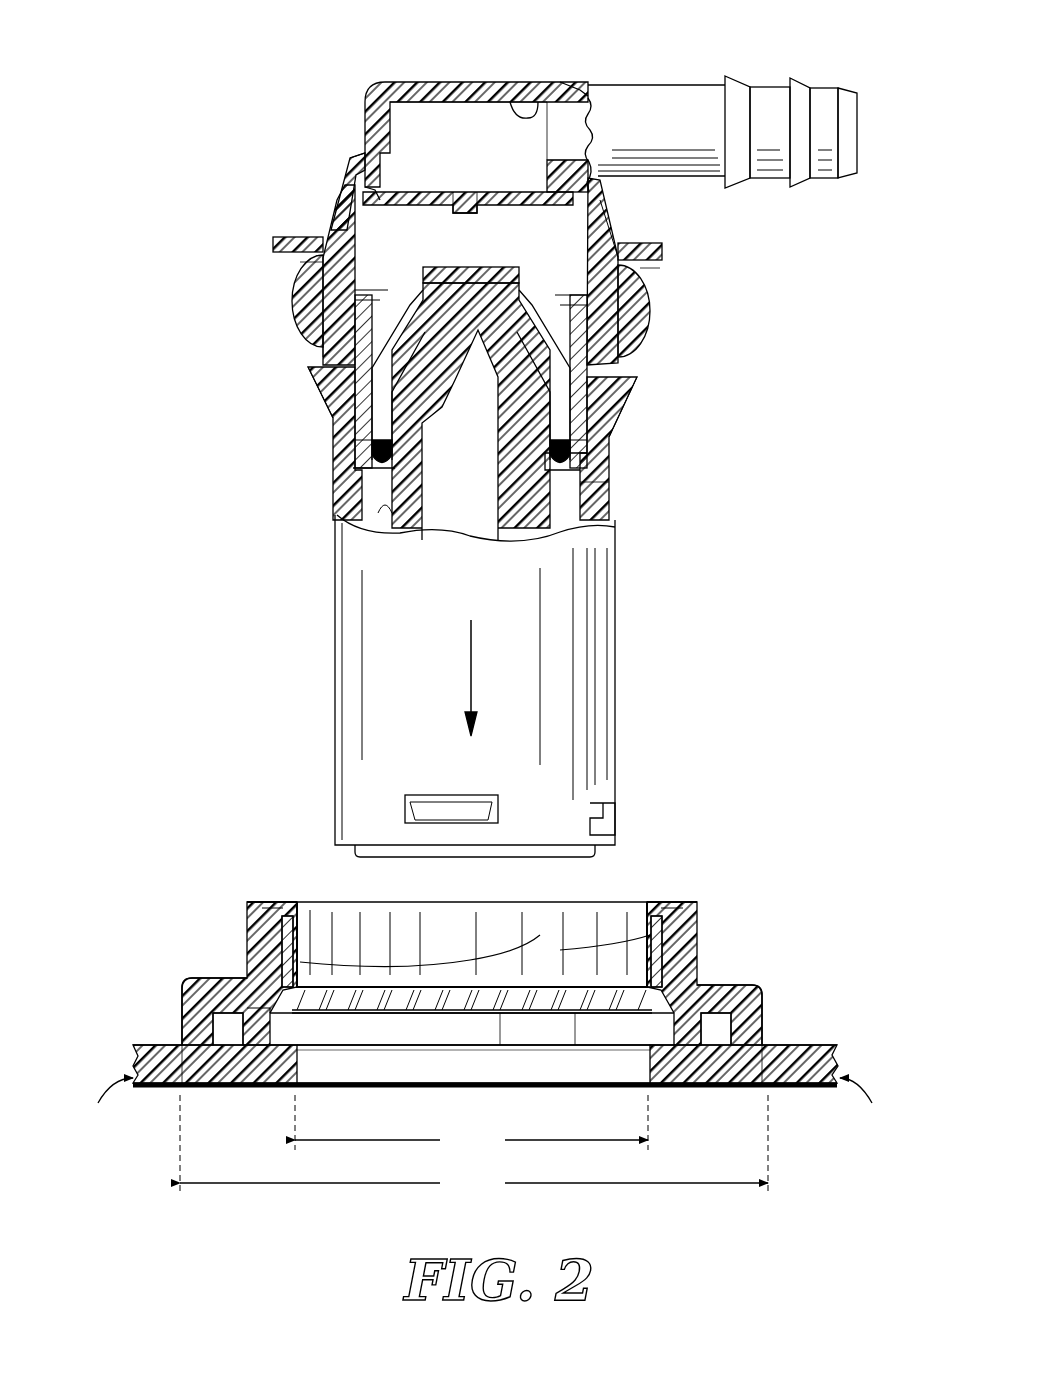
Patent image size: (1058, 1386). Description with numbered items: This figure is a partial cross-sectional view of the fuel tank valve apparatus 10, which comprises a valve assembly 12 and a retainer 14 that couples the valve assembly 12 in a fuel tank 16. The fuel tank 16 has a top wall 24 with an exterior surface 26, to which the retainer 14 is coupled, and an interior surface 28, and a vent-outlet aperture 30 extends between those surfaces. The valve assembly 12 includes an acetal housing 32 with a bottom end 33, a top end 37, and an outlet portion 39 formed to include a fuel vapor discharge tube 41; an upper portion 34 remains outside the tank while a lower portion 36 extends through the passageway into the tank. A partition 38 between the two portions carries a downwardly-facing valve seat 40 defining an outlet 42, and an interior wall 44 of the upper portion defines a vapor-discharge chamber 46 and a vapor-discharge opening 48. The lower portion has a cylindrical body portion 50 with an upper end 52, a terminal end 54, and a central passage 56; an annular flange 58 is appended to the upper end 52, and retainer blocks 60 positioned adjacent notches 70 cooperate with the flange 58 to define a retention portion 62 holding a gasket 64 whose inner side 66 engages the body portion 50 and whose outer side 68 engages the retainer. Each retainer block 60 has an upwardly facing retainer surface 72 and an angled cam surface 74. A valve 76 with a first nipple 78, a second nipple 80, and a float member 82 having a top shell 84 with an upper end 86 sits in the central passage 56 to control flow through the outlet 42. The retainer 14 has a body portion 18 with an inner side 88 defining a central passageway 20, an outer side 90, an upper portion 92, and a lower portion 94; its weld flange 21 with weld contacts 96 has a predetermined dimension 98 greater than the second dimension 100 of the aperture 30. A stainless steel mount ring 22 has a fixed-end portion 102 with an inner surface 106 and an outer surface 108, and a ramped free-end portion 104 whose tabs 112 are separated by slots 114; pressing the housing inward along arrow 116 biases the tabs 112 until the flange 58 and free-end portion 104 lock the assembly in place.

The fuel tank valve apparatus 10 is at (760, 668).
The valve assembly 12 is at (330, 764).
The retainer 14 is at (164, 920).
The fuel tank 16 is at (150, 1098).
The body portion 18 is at (240, 923).
The central passageway 20 is at (618, 896).
The weld flange 21 is at (170, 966).
The mount ring 22 is at (292, 952).
The top wall 24 is at (491, 1116).
The exterior surface 26 is at (160, 1045).
The interior surface 28 is at (168, 1094).
The vent-outlet aperture 30 is at (380, 1064).
The housing 32 is at (332, 195).
The bottom end 33 is at (355, 850).
The upper portion 34 is at (688, 82).
The lower portion 36 is at (332, 636).
The top end 37 is at (348, 158).
The partition 38 is at (398, 185).
The outlet portion 39 is at (366, 112).
The valve seat 40 is at (490, 213).
The fuel vapor discharge tube 41 is at (735, 108).
The outlet 42 is at (470, 186).
The interior wall 44 is at (500, 96).
The vapor-discharge chamber 46 is at (478, 125).
The vapor-discharge opening 48 is at (857, 150).
The body portion 50 is at (545, 632).
The upper end 52 is at (343, 256).
The terminal end 54 is at (605, 845).
The central passage 56 is at (565, 252).
The annular flange 58 is at (273, 244).
The retainer blocks 60 is at (308, 414).
The retention portion 62 is at (300, 348).
The gasket 64 is at (282, 316).
The inner side 66 is at (357, 298).
The outer side 68 is at (297, 290).
The notches 70 is at (364, 355).
The retainer surface 72 is at (313, 372).
The cam surface 74 is at (328, 402).
The valve 76 is at (363, 484).
The first nipple 78 is at (478, 348).
The second nipple 80 is at (470, 283).
The float member 82 is at (600, 490).
The top shell 84 is at (588, 452).
The upper end 86 is at (418, 272).
The inner side 88 is at (588, 942).
The outer side 90 is at (280, 950).
The upper portion 92 is at (430, 898).
The lower portion 94 is at (650, 1024).
The weld contacts 96 is at (210, 1022).
The predetermined dimension 98 is at (474, 1149).
The second dimension 100 is at (471, 1127).
The fixed-end portion 102 is at (268, 898).
The free-end portion 104 is at (300, 1026).
The inner surface 106 is at (370, 963).
The outer surface 108 is at (243, 984).
The tabs 112 is at (504, 1008).
The slots 114 is at (520, 1024).
The arrow 116 is at (468, 676).